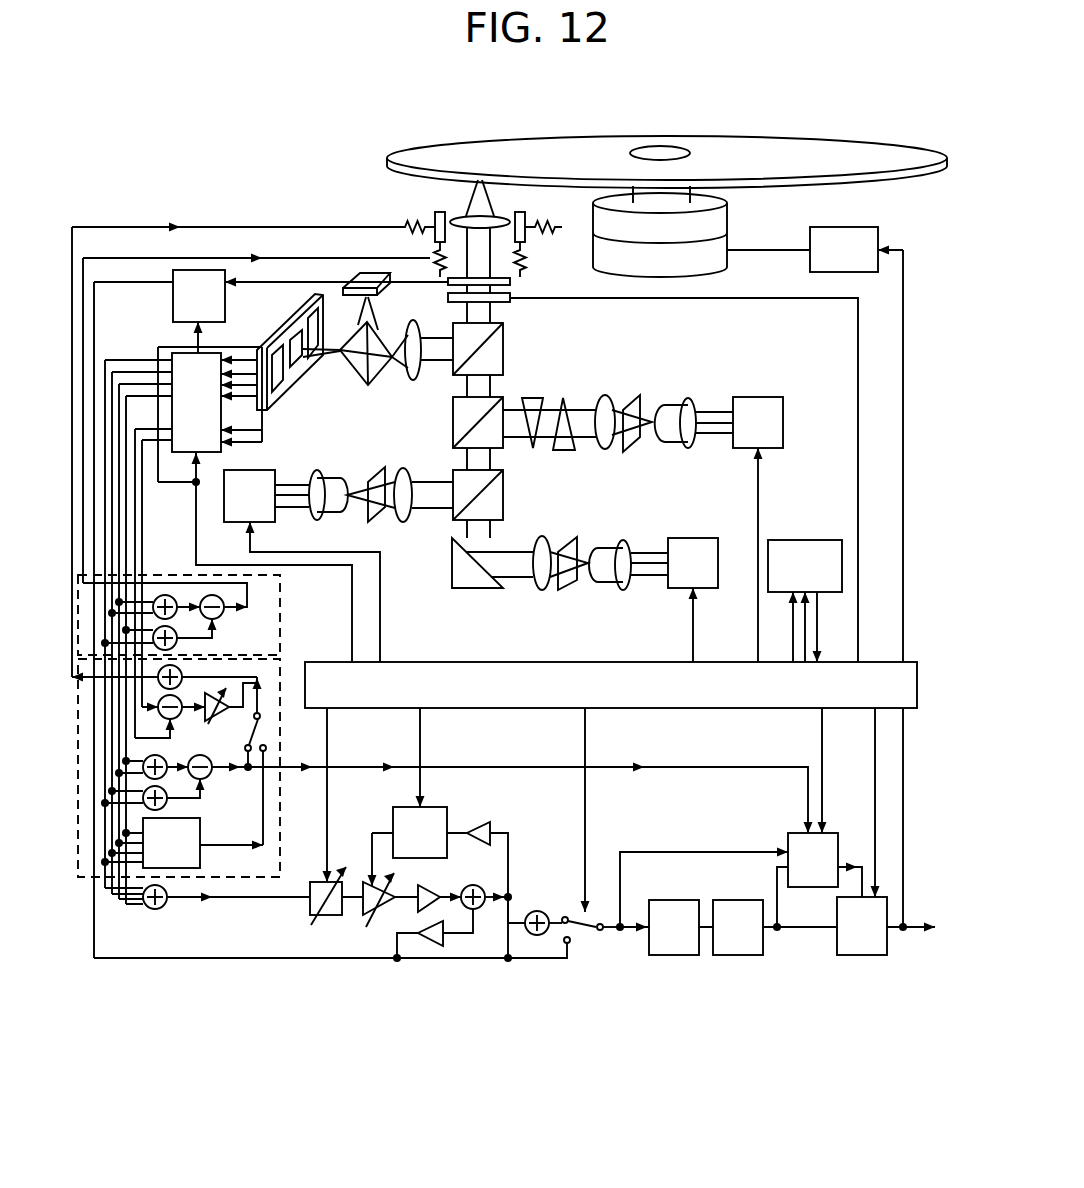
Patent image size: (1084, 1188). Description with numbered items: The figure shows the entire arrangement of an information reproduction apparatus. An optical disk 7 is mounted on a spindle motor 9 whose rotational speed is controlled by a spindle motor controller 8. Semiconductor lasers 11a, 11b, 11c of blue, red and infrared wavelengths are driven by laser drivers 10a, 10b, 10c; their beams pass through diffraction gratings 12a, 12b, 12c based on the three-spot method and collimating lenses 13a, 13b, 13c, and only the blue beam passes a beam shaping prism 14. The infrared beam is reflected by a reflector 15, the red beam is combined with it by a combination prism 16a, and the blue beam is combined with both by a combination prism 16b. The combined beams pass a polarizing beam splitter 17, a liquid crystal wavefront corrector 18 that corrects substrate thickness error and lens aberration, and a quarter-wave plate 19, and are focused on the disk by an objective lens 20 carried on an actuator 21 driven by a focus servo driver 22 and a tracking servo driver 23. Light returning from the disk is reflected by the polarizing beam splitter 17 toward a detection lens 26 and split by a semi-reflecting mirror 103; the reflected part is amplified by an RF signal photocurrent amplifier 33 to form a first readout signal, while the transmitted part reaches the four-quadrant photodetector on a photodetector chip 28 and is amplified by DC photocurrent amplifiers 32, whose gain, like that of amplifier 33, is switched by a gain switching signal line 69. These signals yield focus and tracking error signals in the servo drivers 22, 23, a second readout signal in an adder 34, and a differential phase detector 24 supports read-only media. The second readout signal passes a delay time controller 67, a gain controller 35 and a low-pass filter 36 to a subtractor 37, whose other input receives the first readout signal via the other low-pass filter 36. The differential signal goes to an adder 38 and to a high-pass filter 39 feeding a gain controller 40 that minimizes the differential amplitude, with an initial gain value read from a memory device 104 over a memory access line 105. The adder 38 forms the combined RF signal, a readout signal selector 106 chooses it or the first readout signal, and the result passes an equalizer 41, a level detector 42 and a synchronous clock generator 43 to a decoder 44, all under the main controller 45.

The optical disk 7 is at (870, 148).
The spindle motor controller 8 is at (861, 230).
The spindle motor 9 is at (729, 218).
The objective lens 20 is at (464, 217).
The actuator 21 is at (536, 257).
The quarter-wave plate 19 is at (401, 280).
The liquid crystal wavefront corrector 18 is at (512, 301).
The polarizing beam splitter 17 is at (503, 357).
The combination prism 16b is at (453, 440).
The combination prism 16a is at (503, 508).
The reflector 15 is at (470, 590).
The beam shaping prism 14 is at (563, 452).
The collimating lens 13a is at (605, 449).
The collimating lens 13b is at (541, 590).
The collimating lens 13c is at (403, 522).
The diffraction grating 12a is at (636, 394).
The diffraction grating 12b is at (565, 592).
The diffraction grating 12c is at (374, 523).
The semiconductor laser 11a is at (678, 402).
The semiconductor laser 11b is at (610, 590).
The semiconductor laser 11c is at (330, 512).
The laser driver 10a is at (770, 396).
The laser driver 10b is at (705, 538).
The laser driver 10c is at (265, 470).
The memory device 104 is at (820, 540).
The memory access line 105 is at (818, 638).
The main controller 45 is at (697, 710).
The RF signal photocurrent amplifier 33 is at (173, 305).
The DC photocurrent amplifiers 32 is at (210, 355).
The gain switching signal line 69 is at (194, 516).
The photodetector chip 28 is at (297, 375).
The semi-reflecting mirror 103 is at (363, 377).
The detection lens 26 is at (413, 382).
The focus servo driver 22 is at (282, 620).
The tracking servo driver 23 is at (257, 877).
The differential phase detector 24 is at (200, 826).
The adder 34 is at (155, 909).
The delay time controller 67 is at (338, 916).
The gain controller 35 is at (384, 917).
The low-pass filter 36 is at (437, 886).
The subtractor 37 is at (476, 885).
The adder 38 is at (541, 909).
The high-pass filter 39 is at (483, 822).
The gain controller 40 is at (393, 814).
The readout signal selector 106 is at (587, 935).
The equalizer 41 is at (680, 956).
The level detector 42 is at (743, 956).
The synchronous clock generator 43 is at (815, 888).
The decoder 44 is at (868, 956).